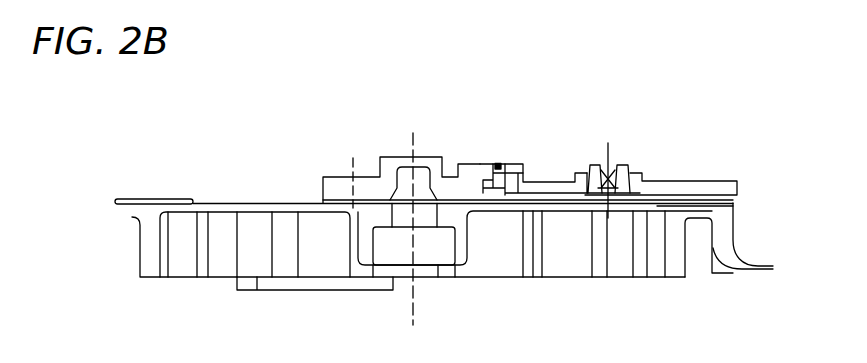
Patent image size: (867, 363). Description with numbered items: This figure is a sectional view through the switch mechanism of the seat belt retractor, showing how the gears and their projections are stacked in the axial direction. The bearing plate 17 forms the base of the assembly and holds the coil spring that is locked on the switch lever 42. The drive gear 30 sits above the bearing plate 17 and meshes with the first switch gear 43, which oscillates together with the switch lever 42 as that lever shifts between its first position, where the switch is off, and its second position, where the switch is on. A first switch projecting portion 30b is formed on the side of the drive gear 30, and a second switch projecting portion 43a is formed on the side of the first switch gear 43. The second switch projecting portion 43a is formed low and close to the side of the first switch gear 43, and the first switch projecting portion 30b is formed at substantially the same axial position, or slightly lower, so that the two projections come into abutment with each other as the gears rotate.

The bearing plate 17 is at (565, 268).
The drive gear 30 is at (392, 157).
The first switch projecting portion 30b is at (477, 163).
The second switch projecting portion 43a is at (512, 160).
The first switch gear 43 is at (688, 186).
The switch lever 42 is at (658, 215).